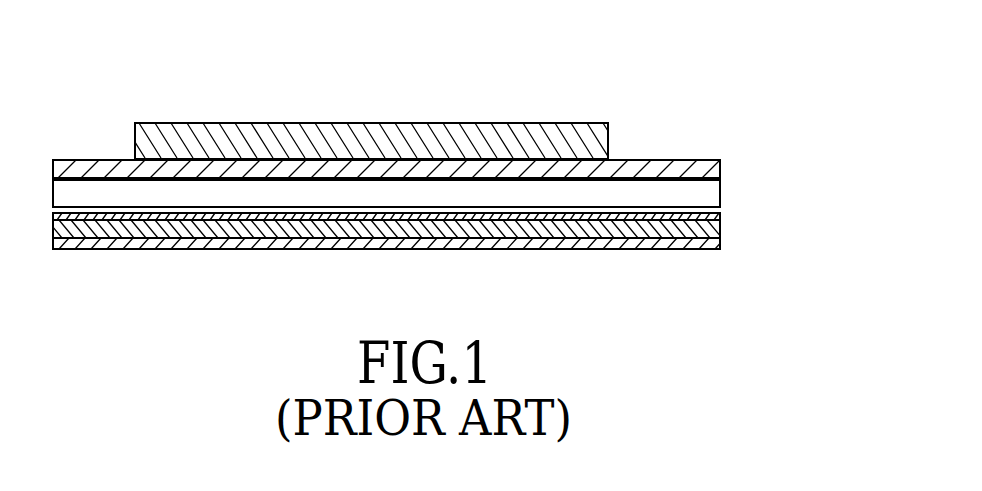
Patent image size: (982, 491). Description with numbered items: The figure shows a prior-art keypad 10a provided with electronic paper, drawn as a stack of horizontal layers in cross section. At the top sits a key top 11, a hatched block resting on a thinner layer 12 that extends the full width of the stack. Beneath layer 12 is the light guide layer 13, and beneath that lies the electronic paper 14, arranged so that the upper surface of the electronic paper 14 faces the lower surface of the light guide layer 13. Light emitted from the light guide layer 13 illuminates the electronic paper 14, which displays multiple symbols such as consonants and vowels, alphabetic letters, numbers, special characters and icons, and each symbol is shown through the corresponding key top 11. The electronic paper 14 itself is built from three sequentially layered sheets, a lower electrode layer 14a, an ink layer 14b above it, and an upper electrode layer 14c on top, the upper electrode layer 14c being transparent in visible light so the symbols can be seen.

The conventional flexible printed circuit board structure 10a is at (515, 20).
The key top 11 is at (341, 131).
The upper cover layer 12 is at (710, 167).
The light guide layer 13 is at (711, 193).
The electronic paper 14 is at (479, 240).
The lower electrode layer 14a is at (720, 243).
The ink layer 14b is at (720, 232).
The upper electrode layer 14c is at (720, 211).